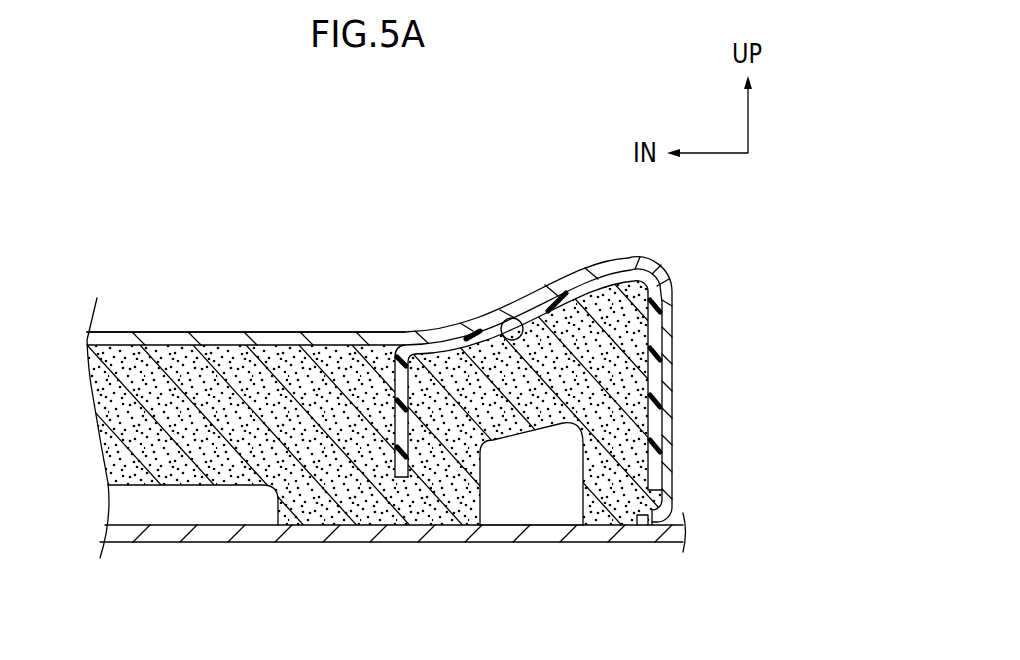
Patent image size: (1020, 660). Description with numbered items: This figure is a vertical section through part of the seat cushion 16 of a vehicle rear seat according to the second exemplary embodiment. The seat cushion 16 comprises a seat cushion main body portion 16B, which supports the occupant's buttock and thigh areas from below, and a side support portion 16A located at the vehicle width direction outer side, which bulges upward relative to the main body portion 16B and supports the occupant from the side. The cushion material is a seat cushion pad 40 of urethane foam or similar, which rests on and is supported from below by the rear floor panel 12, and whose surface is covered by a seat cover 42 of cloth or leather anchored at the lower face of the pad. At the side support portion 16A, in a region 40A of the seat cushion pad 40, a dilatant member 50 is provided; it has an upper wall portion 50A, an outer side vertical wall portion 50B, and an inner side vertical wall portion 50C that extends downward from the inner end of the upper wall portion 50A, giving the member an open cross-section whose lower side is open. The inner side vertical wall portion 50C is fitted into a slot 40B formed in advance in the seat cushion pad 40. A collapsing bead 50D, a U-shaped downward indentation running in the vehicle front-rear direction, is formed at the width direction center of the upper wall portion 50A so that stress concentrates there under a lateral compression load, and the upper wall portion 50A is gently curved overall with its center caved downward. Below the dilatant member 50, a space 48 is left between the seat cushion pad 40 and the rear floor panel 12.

The rear floor panel 12 is at (167, 545).
The seat cushion 16 is at (379, 330).
The side support portion 16A is at (585, 262).
The seat cushion main body portion 16B is at (217, 332).
The seat cushion pad 40 is at (419, 449).
The hole wall portion of cushion member 40A is at (483, 482).
The slot 40B is at (402, 478).
The seat cover 42 is at (140, 332).
The space 48 is at (562, 503).
The dilatant member 50 is at (533, 348).
The upper wall portion 50A is at (460, 330).
The outer side vertical wall portion 50B is at (663, 423).
The inner side vertical wall portion 50C is at (394, 424).
The collapsing bead 50D is at (511, 316).